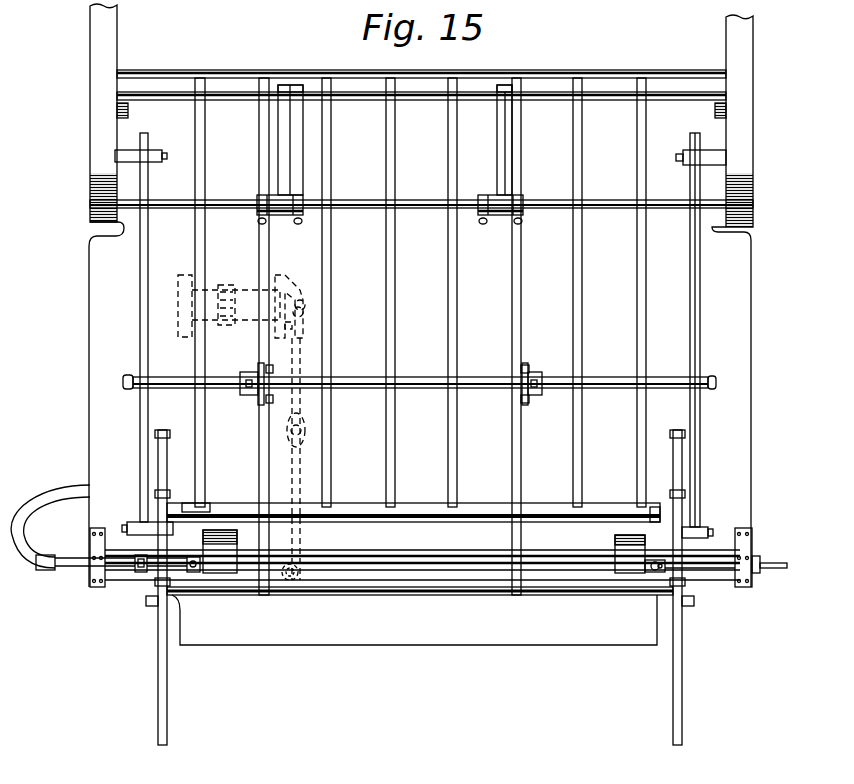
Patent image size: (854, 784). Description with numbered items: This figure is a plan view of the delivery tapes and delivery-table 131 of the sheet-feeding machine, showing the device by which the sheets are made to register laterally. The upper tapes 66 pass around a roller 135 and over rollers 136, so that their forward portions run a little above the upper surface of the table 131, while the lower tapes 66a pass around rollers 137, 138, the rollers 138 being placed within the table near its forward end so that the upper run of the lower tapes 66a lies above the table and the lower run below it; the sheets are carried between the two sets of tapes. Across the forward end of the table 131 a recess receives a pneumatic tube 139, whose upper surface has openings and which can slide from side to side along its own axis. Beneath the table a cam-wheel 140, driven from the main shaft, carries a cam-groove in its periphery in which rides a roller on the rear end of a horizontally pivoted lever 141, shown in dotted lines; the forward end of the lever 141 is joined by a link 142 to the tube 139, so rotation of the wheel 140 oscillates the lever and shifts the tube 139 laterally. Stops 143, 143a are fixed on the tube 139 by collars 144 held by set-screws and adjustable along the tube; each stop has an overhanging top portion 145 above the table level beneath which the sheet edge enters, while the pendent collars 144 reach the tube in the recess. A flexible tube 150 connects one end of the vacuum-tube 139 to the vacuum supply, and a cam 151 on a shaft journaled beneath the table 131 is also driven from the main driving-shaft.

The delivery-table 131 is at (421, 295).
The roller 137 is at (300, 72).
The lower tapes 66a is at (445, 290).
The upper tapes 66 is at (259, 437).
The roller 136 is at (270, 400).
The cam 151 is at (188, 285).
The cam-wheel 140 is at (295, 285).
The lever 141 is at (300, 404).
The roller 138 is at (413, 508).
The pneumatic tube 139 is at (364, 562).
The roller 135 is at (372, 595).
The flexible tube 150 is at (48, 500).
The collar 144 is at (198, 572).
The overhanging top portion 145 is at (427, 551).
The stop 143 is at (218, 530).
The stop 143a is at (622, 535).
The link 142 is at (288, 574).